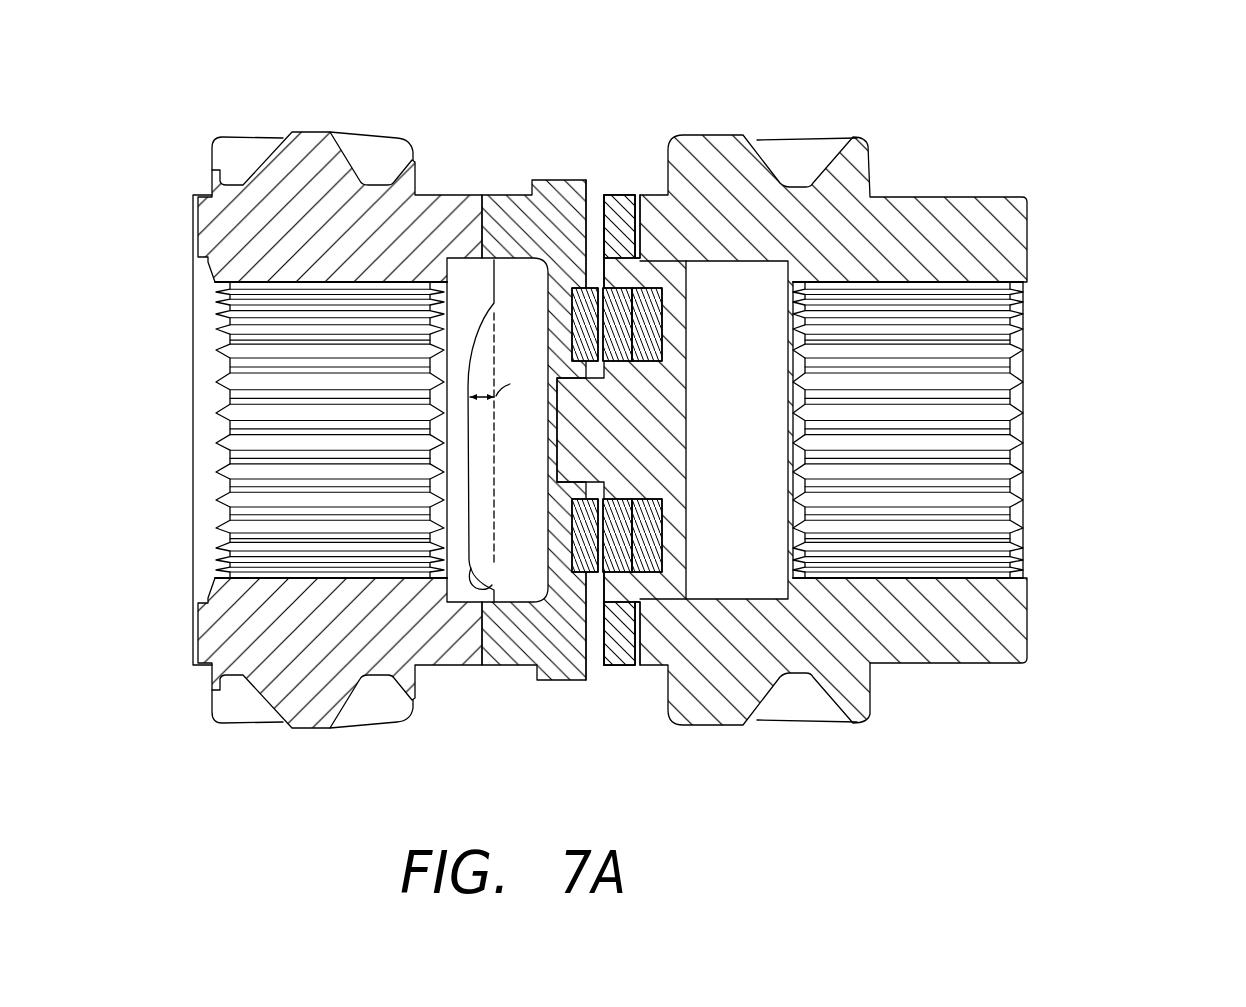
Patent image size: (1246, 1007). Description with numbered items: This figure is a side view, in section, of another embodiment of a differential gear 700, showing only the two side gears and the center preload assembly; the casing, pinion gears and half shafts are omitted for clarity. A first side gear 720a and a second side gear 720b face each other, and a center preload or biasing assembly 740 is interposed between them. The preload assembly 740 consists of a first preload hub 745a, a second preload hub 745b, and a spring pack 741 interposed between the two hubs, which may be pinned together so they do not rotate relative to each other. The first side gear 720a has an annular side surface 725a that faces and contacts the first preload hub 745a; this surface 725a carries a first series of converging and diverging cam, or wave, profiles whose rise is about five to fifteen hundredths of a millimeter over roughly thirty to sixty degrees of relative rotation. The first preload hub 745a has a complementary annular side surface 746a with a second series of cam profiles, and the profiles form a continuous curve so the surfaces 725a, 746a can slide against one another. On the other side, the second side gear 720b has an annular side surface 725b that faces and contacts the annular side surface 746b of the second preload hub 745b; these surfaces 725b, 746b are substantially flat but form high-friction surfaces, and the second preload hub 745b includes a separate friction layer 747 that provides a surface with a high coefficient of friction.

The differential gear 700 is at (1135, 158).
The first side gear 720a is at (290, 124).
The second side gear 720b is at (891, 183).
The annular side surface of the first side gear 725a is at (485, 588).
The annular side surface of the second side gear 725b is at (633, 630).
The center preload assembly 740 is at (688, 94).
The spring pack 741 is at (599, 286).
The first preload hub 745a is at (553, 668).
The second preload hub 745b is at (618, 668).
The annular side surface of the first preload hub 746a is at (503, 289).
The annular side surface of the second preload hub 746b is at (642, 228).
The friction layer 747 is at (639, 227).